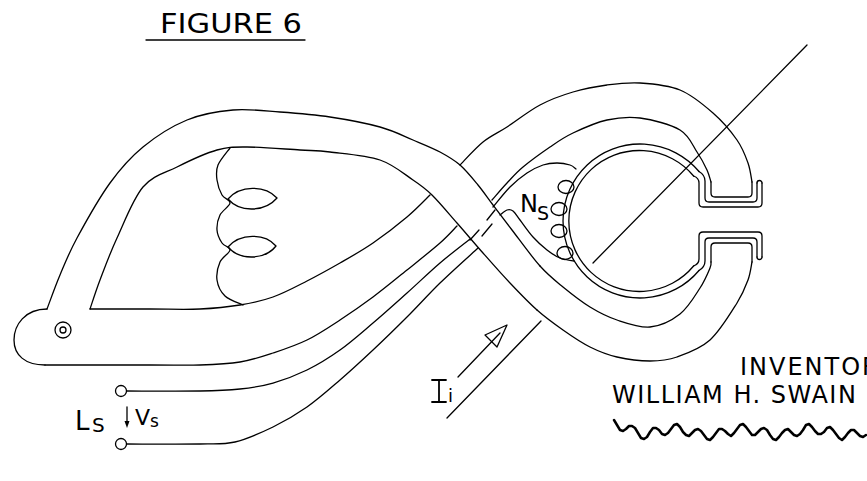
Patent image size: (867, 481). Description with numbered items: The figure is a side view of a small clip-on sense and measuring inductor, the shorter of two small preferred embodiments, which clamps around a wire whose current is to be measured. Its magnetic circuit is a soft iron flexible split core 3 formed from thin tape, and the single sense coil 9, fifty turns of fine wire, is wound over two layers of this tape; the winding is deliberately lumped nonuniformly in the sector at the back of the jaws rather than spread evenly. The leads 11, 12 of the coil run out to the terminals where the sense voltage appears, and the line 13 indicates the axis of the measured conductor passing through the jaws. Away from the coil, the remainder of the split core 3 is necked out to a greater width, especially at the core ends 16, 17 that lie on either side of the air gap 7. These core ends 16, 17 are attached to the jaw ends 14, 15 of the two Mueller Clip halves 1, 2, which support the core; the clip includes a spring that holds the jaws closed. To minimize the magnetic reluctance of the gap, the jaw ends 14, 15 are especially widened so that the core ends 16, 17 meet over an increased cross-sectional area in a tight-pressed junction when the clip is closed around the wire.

The Mueller Clip half 1 is at (606, 141).
The Mueller Clip half 2 is at (644, 311).
The split core 3 is at (690, 262).
The air gap 7 is at (737, 215).
The sense coil 9 is at (584, 206).
The secondary lead 11 is at (293, 318).
The secondary lead 12 is at (297, 349).
The axis line 13 is at (700, 154).
The jaw end 14 is at (731, 182).
The jaw end 15 is at (731, 259).
The core end 16 is at (769, 182).
The core end 17 is at (771, 247).